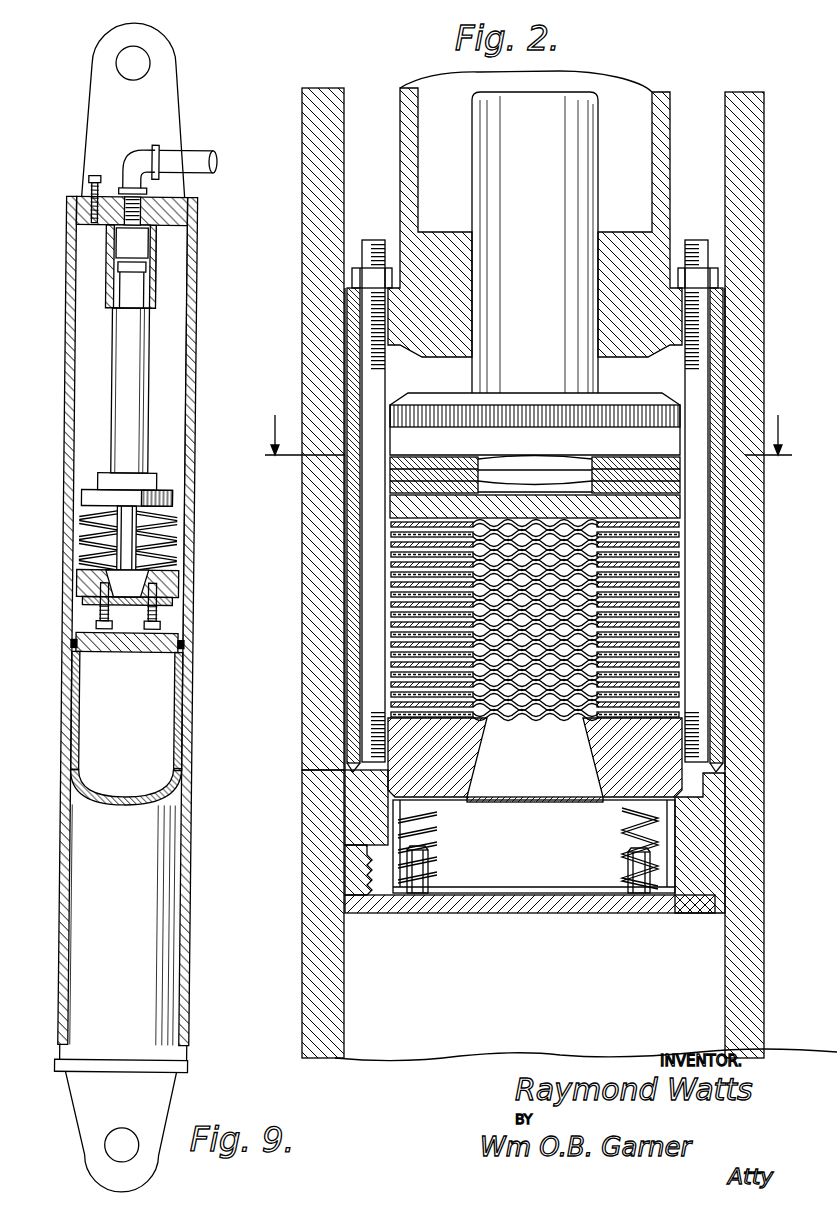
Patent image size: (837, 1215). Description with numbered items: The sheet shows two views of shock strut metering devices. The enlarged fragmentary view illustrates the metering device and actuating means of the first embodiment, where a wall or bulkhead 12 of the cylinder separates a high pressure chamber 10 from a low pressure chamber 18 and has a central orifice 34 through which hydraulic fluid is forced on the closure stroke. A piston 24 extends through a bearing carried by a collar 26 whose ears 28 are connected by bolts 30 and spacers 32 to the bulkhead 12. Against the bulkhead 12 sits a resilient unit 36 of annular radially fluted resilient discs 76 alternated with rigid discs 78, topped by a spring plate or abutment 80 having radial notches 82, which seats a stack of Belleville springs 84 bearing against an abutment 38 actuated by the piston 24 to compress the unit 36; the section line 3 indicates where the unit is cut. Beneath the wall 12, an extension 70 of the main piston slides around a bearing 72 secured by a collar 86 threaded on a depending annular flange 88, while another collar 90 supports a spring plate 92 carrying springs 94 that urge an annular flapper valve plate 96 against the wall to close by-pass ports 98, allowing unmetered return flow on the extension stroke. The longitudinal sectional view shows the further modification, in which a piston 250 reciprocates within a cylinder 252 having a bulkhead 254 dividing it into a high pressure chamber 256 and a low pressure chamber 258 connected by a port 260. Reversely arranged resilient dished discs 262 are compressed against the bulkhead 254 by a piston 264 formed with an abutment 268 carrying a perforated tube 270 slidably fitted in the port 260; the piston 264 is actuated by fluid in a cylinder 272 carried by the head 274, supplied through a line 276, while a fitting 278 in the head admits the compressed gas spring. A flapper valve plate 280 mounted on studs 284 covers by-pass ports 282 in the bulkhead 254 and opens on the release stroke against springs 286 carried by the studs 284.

In FIG. 2, the high pressure chamber 10 is at (420, 1046).
In FIG. 2, the wall or bulkhead 12 is at (725, 766).
In FIG. 2, the low pressure chamber 18 is at (360, 112).
In FIG. 2, the piston 24 is at (582, 100).
In FIG. 2, the collar 26 is at (627, 250).
In FIG. 2, the ears 28 is at (356, 318).
In FIG. 2, the bolts 30 is at (692, 386).
In FIG. 2, the spacers 32 is at (716, 528).
In FIG. 2, the central opening or orifice 34 is at (582, 802).
In FIG. 2, the resilient unit 36 is at (593, 620).
In FIG. 2, the abutment 38 is at (672, 398).
In FIG. 2, the section line 3- 3 is at (528, 424).
In FIG. 2, the extension 70 is at (310, 972).
In FIG. 2, the bearing 72 is at (345, 810).
In FIG. 2, the resilient discs 76 is at (682, 583).
In FIG. 2, the rigid discs 78 is at (682, 632).
In FIG. 2, the spring plate or abutment 80 is at (682, 552).
In FIG. 2, the radial notches 82 is at (485, 492).
In FIG. 2, the Belleville springs 84 is at (625, 490).
In FIG. 2, the collar 86 is at (342, 862).
In FIG. 2, the depending annular flange 88 is at (690, 823).
In FIG. 2, the collar 90 is at (700, 888).
In FIG. 2, the spring plate 92 is at (648, 906).
In FIG. 2, the springs 94 is at (440, 866).
In FIG. 2, the flapper valve plate 96 is at (515, 796).
In FIG. 2, the by-pass ports 98 is at (690, 742).
In FIG. 9, the piston 250 is at (100, 855).
In FIG. 9, the cylinder 252 is at (70, 265).
In FIG. 9, the bulkhead 254 is at (180, 588).
In FIG. 9, the high pressure chamber 256 is at (176, 622).
In FIG. 9, the low pressure chamber 258 is at (165, 318).
In FIG. 9, the passage or port 260 is at (80, 594).
In FIG. 9, the dished discs 262 is at (165, 525).
In FIG. 9, the piston 264 is at (116, 398).
In FIG. 9, the abutment 268 is at (100, 482).
In FIG. 9, the perforated tube 270 is at (88, 518).
In FIG. 9, the cylinder 272 is at (105, 300).
In FIG. 9, the top wall or head 274 is at (118, 188).
In FIG. 9, the line 276 is at (195, 160).
In FIG. 9, the fitting 278 is at (88, 188).
In FIG. 9, the flapper valve plate 280 is at (185, 605).
In FIG. 9, the by-pass ports 282 is at (78, 565).
In FIG. 9, the studs 284 is at (74, 646).
In FIG. 9, the springs 286 is at (98, 612).